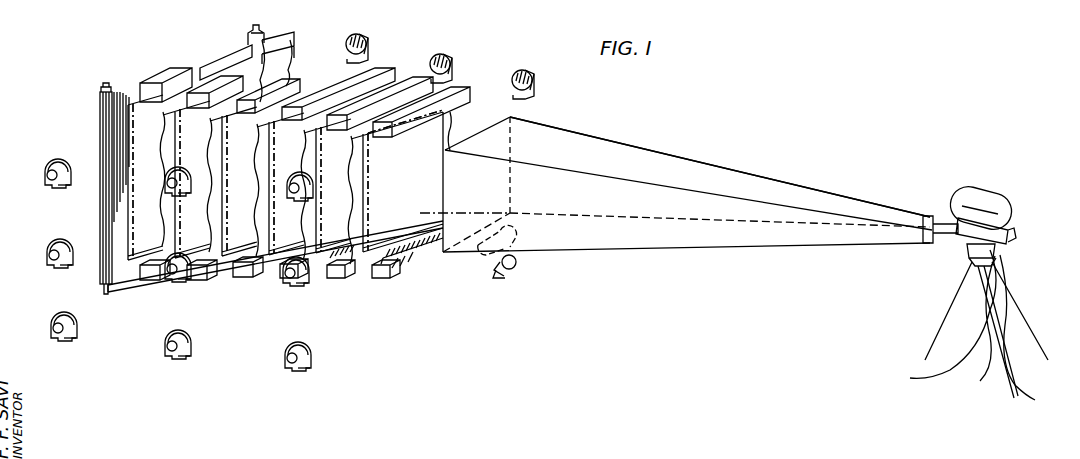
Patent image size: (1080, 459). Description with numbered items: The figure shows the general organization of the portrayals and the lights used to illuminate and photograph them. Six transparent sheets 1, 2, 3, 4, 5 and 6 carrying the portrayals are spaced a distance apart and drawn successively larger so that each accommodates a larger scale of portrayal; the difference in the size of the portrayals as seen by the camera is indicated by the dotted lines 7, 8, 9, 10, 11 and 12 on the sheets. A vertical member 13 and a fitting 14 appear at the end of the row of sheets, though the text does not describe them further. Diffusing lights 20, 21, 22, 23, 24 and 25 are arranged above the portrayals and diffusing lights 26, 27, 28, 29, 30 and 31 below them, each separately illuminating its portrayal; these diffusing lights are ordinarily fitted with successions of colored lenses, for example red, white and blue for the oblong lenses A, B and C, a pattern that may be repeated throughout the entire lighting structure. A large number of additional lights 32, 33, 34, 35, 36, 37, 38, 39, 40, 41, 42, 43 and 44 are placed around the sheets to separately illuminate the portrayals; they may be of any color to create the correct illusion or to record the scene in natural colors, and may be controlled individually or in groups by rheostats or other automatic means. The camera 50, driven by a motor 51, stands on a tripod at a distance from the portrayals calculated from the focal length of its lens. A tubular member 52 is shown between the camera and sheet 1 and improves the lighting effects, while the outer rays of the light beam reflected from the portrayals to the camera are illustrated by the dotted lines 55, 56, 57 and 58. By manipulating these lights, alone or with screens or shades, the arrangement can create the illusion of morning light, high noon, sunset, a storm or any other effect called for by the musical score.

The transparent sheet 1 is at (399, 187).
The transparent sheet 2 is at (326, 189).
The transparent sheet 3 is at (279, 184).
The transparent sheet 4 is at (232, 181).
The transparent sheet 5 is at (185, 179).
The transparent sheet 6 is at (145, 177).
The dotted line 7 is at (368, 199).
The dotted line 8 is at (321, 199).
The dotted line 9 is at (274, 163).
The dotted line 10 is at (227, 163).
The dotted line 11 is at (180, 148).
The dotted line 12 is at (133, 148).
The roller 13 is at (100, 93).
The rail clamp 14 is at (248, 28).
The diffusing light 20 is at (462, 90).
The diffusing light 21 is at (404, 80).
The diffusing light 22 is at (382, 68).
The diffusing light 23 is at (268, 80).
The diffusing light 24 is at (216, 80).
The diffusing light 25 is at (165, 76).
The diffusing light 26 is at (380, 278).
The diffusing light 27 is at (338, 278).
The diffusing light 28 is at (283, 278).
The diffusing light 29 is at (245, 278).
The diffusing light 30 is at (205, 280).
The diffusing light 31 is at (145, 281).
The light 32 is at (312, 352).
The light 33 is at (193, 338).
The light 34 is at (80, 324).
The light 35 is at (298, 286).
The light 36 is at (174, 278).
The light 37 is at (62, 241).
The light 38 is at (307, 177).
The light 39 is at (170, 182).
The light 40 is at (60, 160).
The light 41 is at (530, 70).
The light 42 is at (448, 56).
The light 43 is at (360, 34).
The light 44 is at (514, 268).
The camera 50 is at (965, 243).
The motor 51 is at (976, 290).
The tubular member 52 is at (704, 164).
The dotted line 55 is at (430, 254).
The dotted line 56 is at (405, 144).
The dotted line 57 is at (473, 112).
The dotted line 58 is at (472, 211).
The oblong lens A is at (394, 268).
The oblong lens B is at (403, 264).
The oblong lens C is at (411, 258).